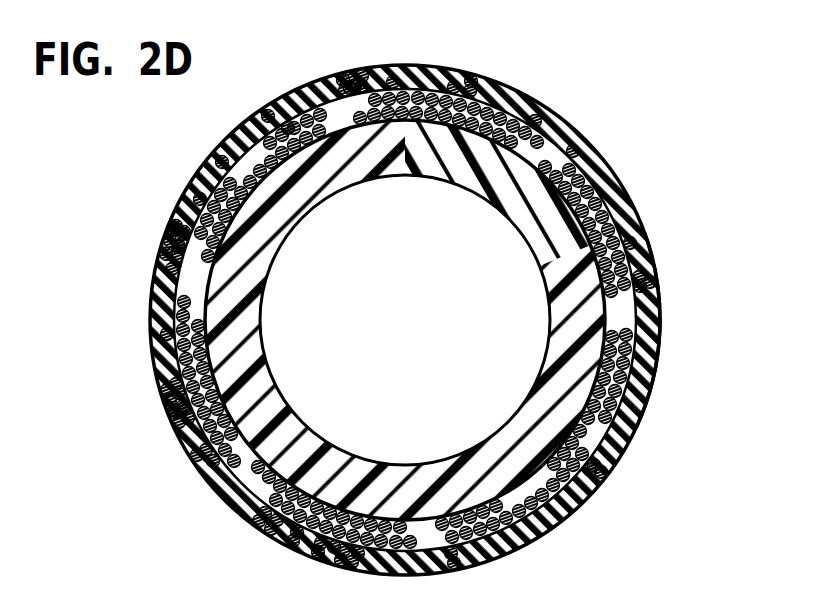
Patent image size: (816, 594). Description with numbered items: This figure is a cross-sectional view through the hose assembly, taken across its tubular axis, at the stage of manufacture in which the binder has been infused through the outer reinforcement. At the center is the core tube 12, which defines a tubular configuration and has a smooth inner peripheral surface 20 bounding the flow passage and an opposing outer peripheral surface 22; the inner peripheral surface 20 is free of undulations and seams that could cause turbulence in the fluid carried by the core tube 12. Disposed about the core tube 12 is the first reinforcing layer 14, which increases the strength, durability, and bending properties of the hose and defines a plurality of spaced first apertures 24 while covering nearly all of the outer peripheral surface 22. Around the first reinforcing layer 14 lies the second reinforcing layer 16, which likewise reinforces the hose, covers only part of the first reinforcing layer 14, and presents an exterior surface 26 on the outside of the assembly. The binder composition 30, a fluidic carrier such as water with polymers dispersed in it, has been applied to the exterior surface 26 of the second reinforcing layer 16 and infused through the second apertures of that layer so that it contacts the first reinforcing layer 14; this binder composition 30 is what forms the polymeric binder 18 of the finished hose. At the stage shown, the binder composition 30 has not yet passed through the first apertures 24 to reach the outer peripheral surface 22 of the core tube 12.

The core tube 12 is at (230, 303).
The first reinforcing layer 14 is at (633, 216).
The second reinforcing layer 16 is at (660, 317).
The polymeric binder 18 is at (645, 270).
The inner peripheral surface 20 is at (429, 181).
The outer peripheral surface 22 is at (548, 178).
The first apertures 24 is at (195, 447).
The exterior surface 26 is at (651, 392).
The binder composition 30 is at (175, 225).